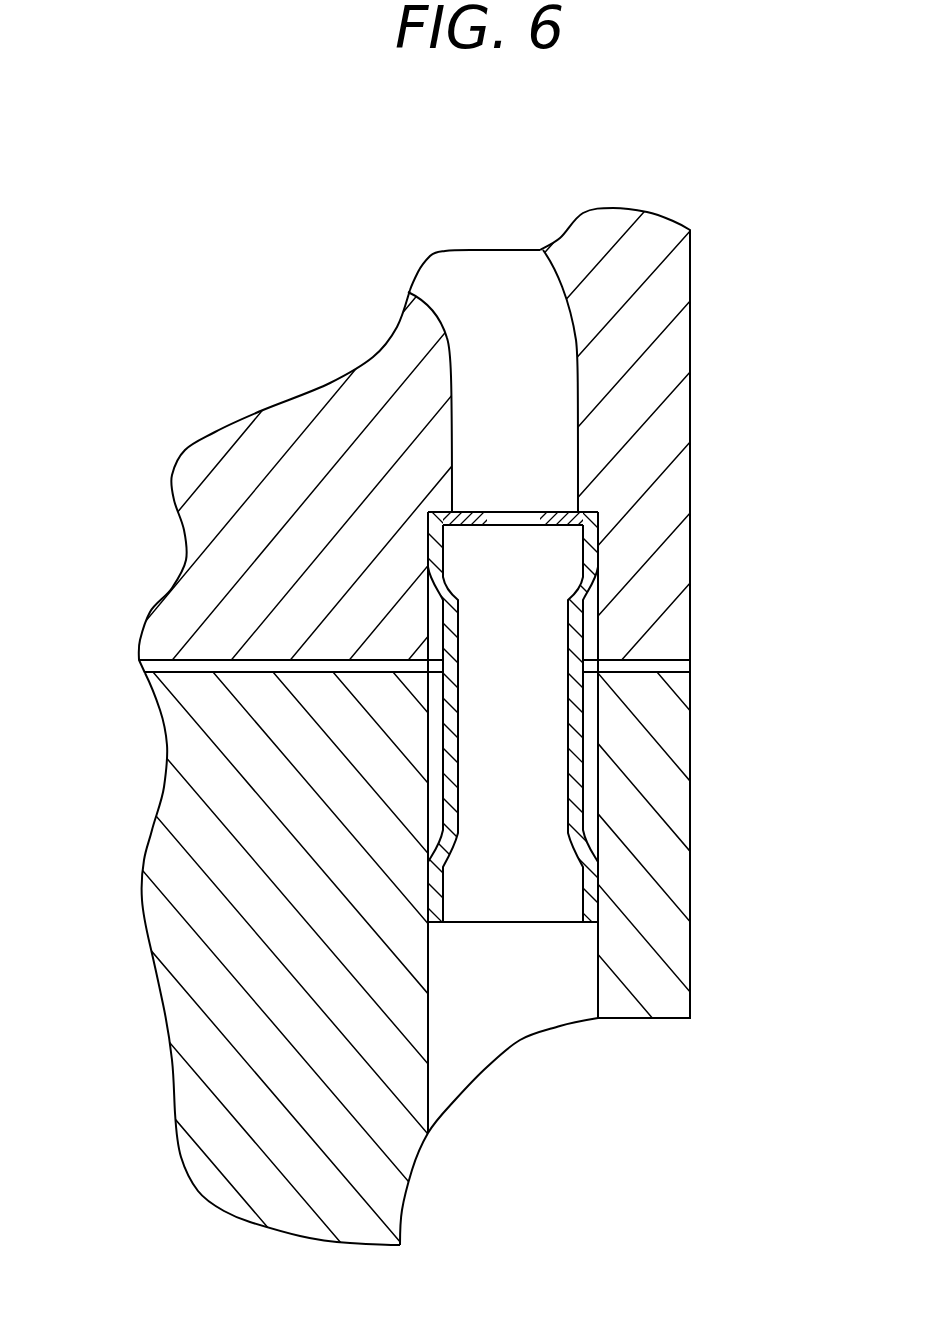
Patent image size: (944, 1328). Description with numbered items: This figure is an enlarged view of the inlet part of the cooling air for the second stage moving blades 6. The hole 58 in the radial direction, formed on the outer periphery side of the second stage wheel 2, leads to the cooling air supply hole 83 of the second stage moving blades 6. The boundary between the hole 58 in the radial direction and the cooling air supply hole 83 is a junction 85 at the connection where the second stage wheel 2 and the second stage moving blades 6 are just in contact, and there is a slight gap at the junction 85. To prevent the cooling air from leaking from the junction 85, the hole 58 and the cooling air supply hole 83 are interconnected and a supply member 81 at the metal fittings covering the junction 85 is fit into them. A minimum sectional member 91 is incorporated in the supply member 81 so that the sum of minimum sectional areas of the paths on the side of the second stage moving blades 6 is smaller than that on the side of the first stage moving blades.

The second stage wheel 2 is at (172, 937).
The second stage moving blades 6 is at (665, 368).
The hole in the radial direction 58 is at (428, 1033).
The supply member 81 is at (583, 736).
The cooling air supply hole 83 is at (498, 273).
The junction 85 is at (257, 660).
The minimum sectional member 91 is at (450, 462).